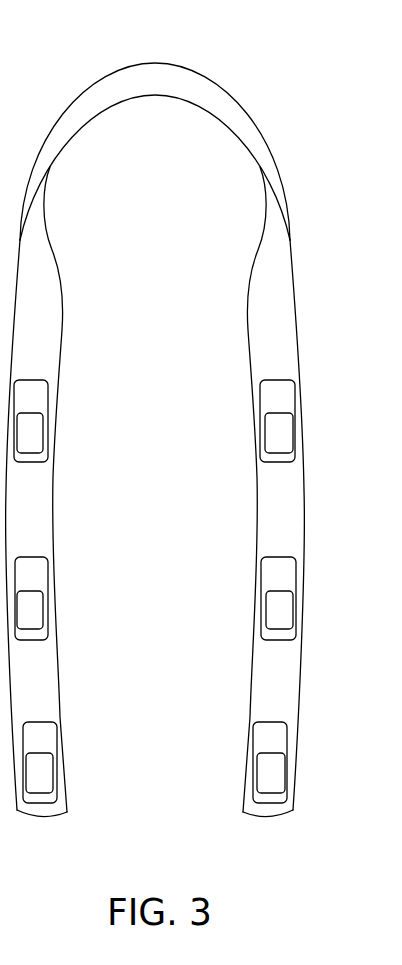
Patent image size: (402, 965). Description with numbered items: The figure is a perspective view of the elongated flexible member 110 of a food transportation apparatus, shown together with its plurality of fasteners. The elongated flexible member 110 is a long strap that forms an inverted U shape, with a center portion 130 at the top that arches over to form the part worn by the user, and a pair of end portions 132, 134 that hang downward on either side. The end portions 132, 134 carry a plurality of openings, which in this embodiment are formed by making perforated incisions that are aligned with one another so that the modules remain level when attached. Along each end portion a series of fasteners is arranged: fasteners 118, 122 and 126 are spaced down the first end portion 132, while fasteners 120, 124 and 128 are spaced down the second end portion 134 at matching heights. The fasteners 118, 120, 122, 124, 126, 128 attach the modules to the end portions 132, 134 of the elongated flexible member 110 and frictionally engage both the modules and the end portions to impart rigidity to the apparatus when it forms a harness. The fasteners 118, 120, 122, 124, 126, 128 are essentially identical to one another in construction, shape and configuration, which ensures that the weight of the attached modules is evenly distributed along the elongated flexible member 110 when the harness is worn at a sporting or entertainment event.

The elongated flexible member 110 is at (217, 60).
The center portion 130 is at (146, 82).
The end portion 132 is at (38, 505).
The end portion 134 is at (287, 502).
The fastener 118 is at (41, 395).
The fastener 120 is at (268, 395).
The fastener 122 is at (42, 573).
The fastener 124 is at (267, 573).
The fastener 126 is at (50, 737).
The fastener 128 is at (260, 737).